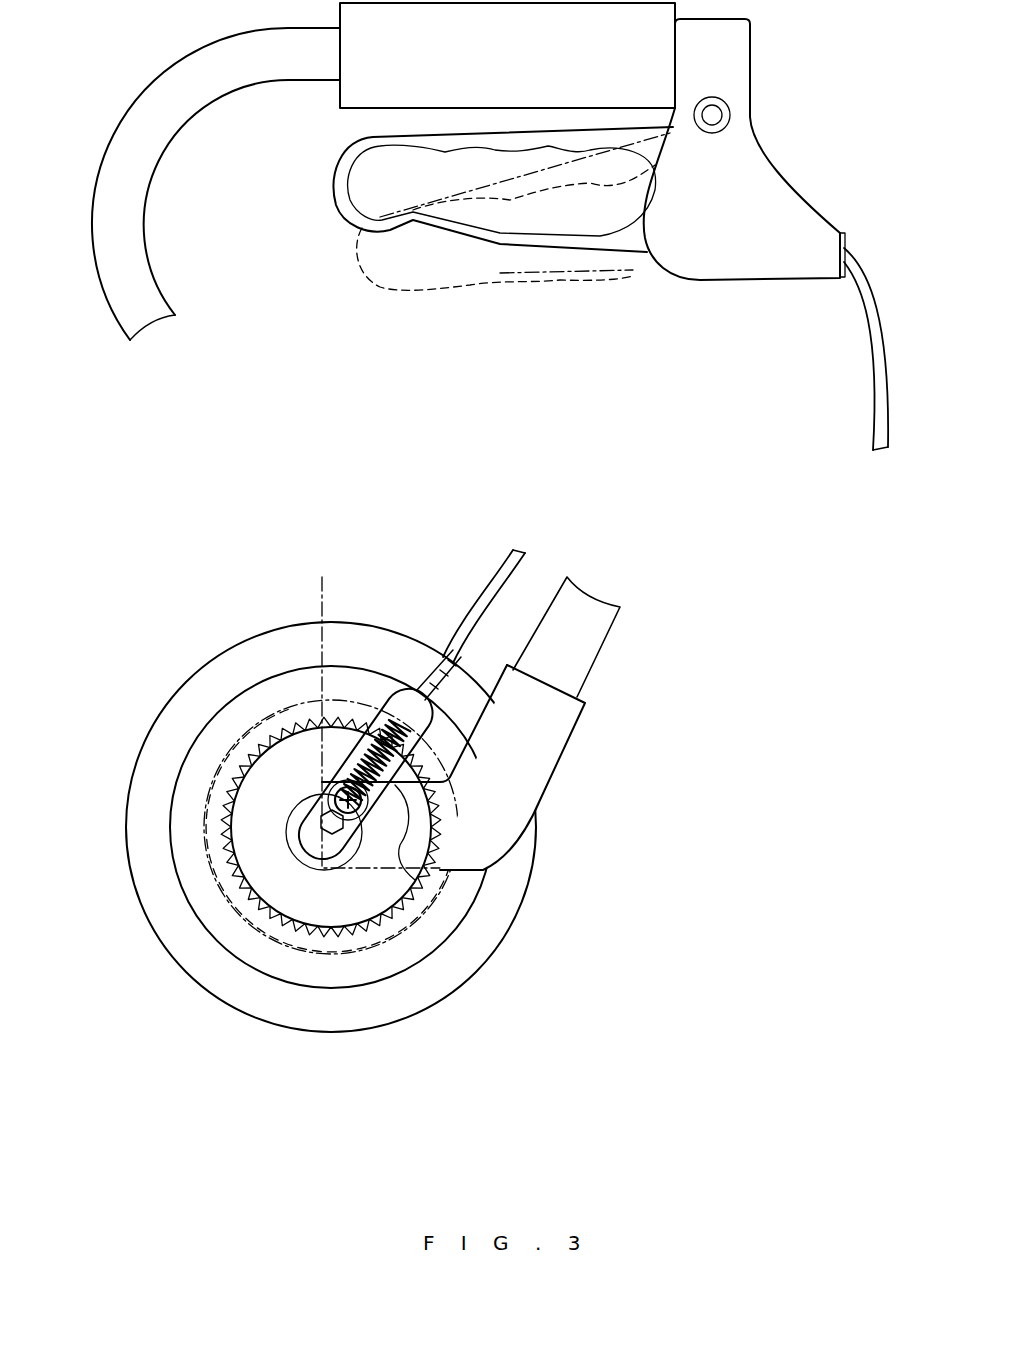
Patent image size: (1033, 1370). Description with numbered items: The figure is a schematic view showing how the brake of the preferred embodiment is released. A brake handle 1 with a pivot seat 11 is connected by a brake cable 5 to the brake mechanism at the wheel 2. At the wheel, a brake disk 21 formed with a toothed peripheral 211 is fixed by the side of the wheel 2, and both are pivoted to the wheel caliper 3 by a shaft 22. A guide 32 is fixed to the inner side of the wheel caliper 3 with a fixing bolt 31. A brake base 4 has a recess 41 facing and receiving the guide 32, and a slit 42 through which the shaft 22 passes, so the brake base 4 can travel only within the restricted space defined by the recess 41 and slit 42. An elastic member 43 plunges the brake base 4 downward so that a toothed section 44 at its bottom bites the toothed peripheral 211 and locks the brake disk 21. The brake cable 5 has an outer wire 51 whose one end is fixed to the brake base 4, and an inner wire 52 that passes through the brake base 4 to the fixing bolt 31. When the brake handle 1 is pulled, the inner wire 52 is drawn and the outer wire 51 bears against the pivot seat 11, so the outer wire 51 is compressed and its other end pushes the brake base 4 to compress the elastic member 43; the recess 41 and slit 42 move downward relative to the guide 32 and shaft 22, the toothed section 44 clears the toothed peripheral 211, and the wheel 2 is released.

The brake handle 1 is at (580, 243).
The pivot seat 11 is at (760, 183).
The wheel 2 is at (210, 668).
The brake disk 21 is at (323, 739).
The toothed peripheral 211 is at (300, 735).
The shaft 22 is at (337, 845).
The wheel caliper 3 is at (560, 730).
The fixing bolt 31 is at (358, 812).
The guide 32 is at (342, 836).
The brake base 4 is at (287, 963).
The recess 41 is at (377, 730).
The slit 42 is at (331, 747).
The elastic member 43 is at (367, 733).
The toothed section 44 is at (250, 927).
The brake cable 5 is at (823, 857).
The outer wire 51 is at (882, 410).
The inner wire 52 is at (345, 828).